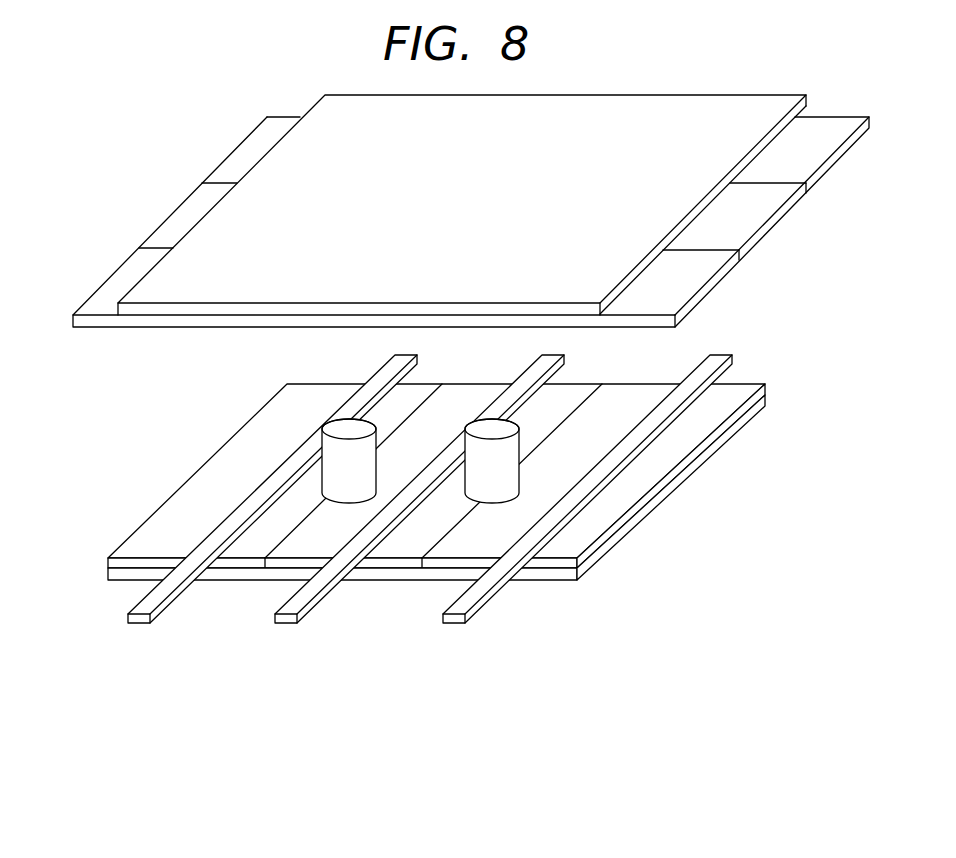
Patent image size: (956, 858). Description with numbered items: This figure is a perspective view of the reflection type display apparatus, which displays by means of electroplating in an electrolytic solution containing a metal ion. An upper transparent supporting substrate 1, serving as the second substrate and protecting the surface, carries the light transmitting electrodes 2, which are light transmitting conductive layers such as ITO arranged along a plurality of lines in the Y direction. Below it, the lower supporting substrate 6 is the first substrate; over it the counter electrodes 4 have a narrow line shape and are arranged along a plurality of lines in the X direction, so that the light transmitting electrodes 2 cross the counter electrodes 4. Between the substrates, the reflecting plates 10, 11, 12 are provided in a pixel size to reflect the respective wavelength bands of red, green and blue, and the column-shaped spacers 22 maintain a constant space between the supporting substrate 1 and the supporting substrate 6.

The supporting substrate 1 is at (302, 145).
The light transmitting electrode 2 is at (230, 172).
The counter electrode 4 is at (170, 603).
The supporting substrate 6 is at (125, 577).
The reflecting plate 10 is at (272, 413).
The reflecting plate 11 is at (473, 393).
The reflecting plate 12 is at (641, 393).
The spacer 22 is at (332, 450).